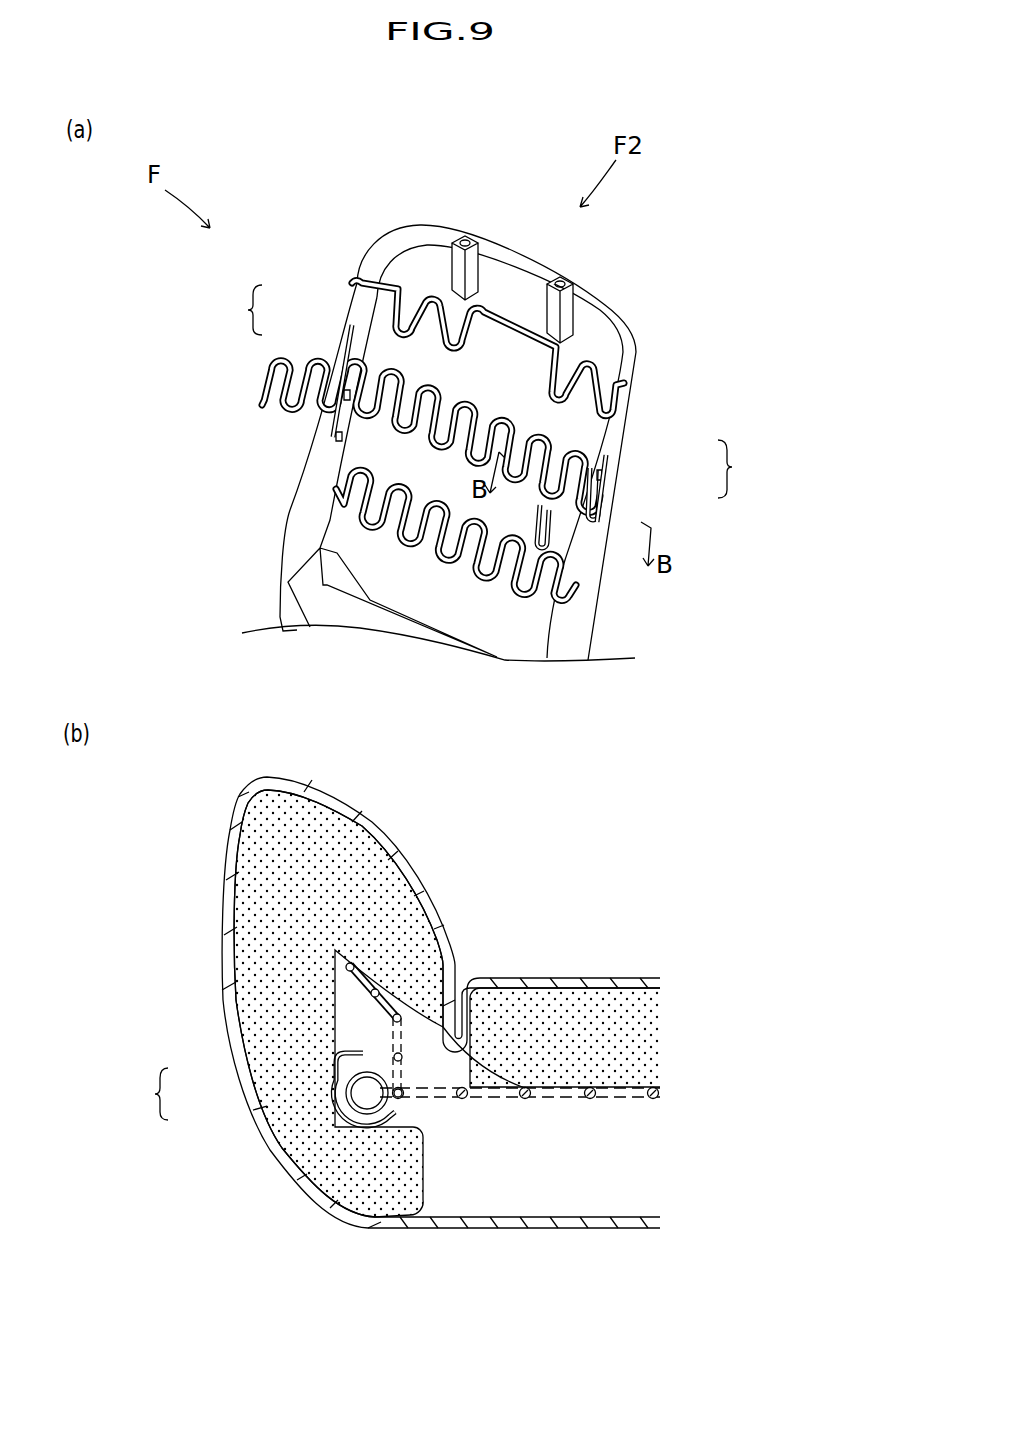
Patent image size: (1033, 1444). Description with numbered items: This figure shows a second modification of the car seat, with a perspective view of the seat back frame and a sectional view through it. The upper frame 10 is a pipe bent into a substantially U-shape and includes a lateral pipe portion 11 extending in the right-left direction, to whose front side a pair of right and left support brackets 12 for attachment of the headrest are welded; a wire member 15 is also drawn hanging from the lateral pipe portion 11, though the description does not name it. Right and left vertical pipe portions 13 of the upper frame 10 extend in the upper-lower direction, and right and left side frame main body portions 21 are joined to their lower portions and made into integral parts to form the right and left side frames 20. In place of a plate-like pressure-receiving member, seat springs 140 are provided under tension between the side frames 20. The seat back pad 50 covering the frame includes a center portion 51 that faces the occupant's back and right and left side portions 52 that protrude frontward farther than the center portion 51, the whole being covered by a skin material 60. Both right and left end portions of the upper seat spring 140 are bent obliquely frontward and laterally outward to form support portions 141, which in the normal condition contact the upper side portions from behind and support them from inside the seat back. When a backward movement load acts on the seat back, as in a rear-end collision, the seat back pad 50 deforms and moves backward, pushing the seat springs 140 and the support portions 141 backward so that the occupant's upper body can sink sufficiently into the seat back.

The upper frame 10 is at (627, 300).
The lateral pipe portion 11 is at (522, 270).
The support bracket 12 is at (466, 236).
The vertical pipe portion 13 is at (362, 302).
The hanging wire 15 is at (505, 308).
The side frame 20 is at (447, 702).
The side frame main body portion 21 is at (340, 355).
The seat back pad 50 is at (545, 972).
The center portion 51 is at (603, 1013).
The side portion 52 is at (395, 893).
The skin material 60 is at (322, 797).
The seat spring 140 is at (494, 392).
The support portion 141 is at (275, 420).